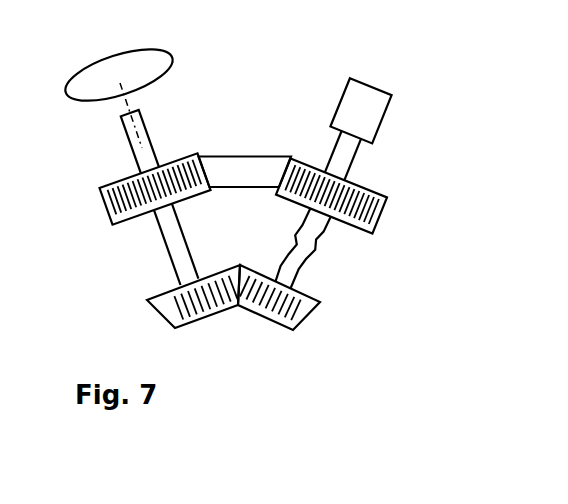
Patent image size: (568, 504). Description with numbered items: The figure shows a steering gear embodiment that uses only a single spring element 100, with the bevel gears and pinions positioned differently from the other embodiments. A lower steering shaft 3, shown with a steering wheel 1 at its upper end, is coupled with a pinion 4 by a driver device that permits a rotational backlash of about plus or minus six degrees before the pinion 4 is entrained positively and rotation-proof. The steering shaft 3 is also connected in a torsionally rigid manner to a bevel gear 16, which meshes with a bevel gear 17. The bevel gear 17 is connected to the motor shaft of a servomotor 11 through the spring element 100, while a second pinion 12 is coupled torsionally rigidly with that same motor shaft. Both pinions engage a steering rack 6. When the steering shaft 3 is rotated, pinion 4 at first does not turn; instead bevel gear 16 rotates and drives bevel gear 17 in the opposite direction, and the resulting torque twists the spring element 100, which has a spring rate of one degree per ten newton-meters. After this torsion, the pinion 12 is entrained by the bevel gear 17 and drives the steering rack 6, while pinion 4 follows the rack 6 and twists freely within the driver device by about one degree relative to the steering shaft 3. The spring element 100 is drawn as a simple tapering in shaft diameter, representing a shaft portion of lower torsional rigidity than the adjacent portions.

The workpiece / substrate 1 is at (150, 58).
The lower steering shaft 3 is at (142, 151).
The pinion 4 is at (117, 195).
The steering rack 6 is at (232, 175).
The servomotor 11 is at (367, 105).
The second pinion 12 is at (367, 198).
The bevel gear 16 is at (158, 313).
The bevel gear 17 is at (300, 315).
The spring element 100 is at (295, 255).